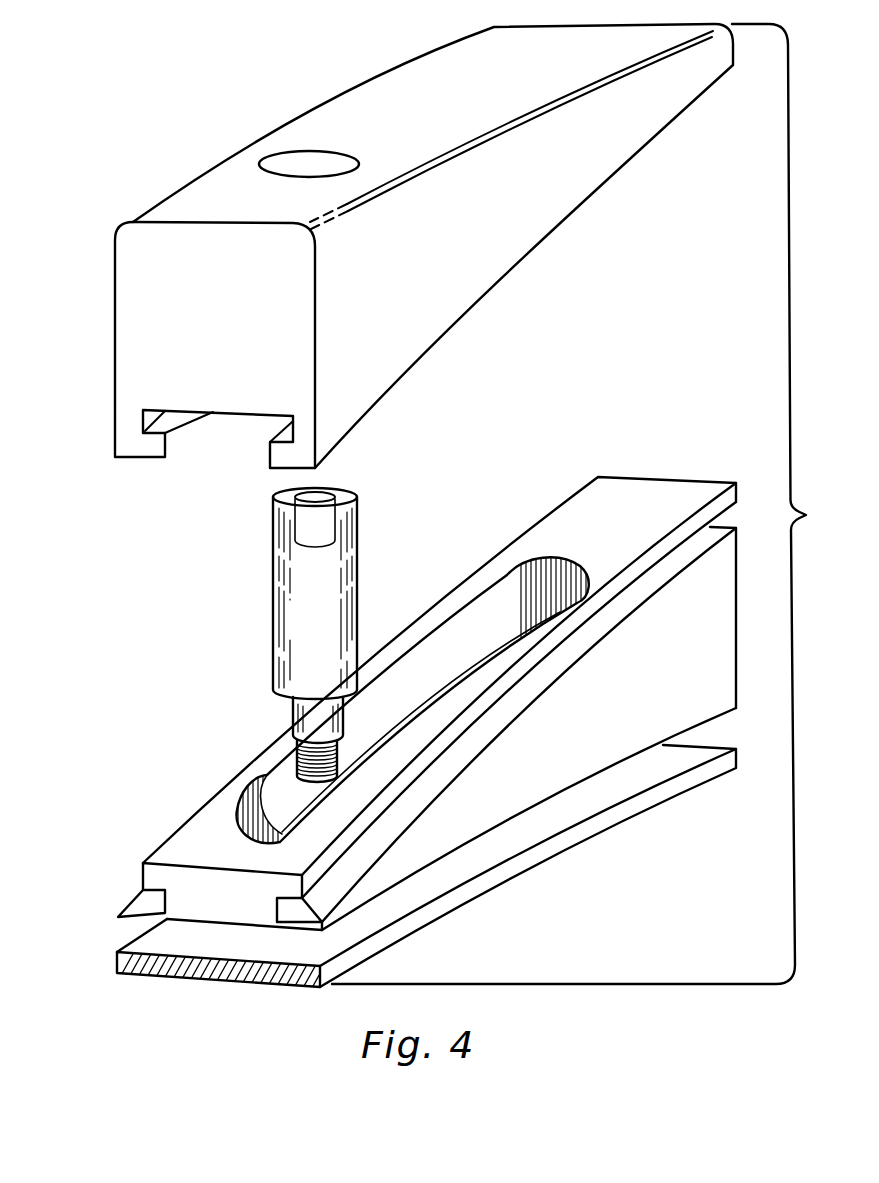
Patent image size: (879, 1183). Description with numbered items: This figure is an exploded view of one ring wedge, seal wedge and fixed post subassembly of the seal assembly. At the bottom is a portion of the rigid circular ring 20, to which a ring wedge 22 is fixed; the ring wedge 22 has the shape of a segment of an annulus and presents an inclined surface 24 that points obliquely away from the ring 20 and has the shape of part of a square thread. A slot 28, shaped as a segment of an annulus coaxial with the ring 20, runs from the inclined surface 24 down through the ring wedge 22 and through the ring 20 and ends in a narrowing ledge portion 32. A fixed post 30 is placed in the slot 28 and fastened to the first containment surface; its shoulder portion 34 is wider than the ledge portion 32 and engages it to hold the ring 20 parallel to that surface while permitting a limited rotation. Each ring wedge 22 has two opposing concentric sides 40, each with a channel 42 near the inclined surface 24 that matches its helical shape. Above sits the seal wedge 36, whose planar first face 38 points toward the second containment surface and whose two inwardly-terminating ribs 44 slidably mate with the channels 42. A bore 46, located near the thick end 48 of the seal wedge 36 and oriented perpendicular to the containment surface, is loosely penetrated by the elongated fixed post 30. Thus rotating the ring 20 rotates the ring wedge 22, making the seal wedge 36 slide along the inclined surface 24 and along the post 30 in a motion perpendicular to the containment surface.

The rigid circular ring 20 is at (635, 807).
The ring wedge 22 is at (389, 703).
The inclined surface 24 is at (210, 840).
The slot 28 is at (431, 661).
The fixed post 30 is at (264, 645).
The ledge portion 32 is at (290, 802).
The shoulder portion 34 is at (280, 703).
The seal wedge 36 is at (383, 271).
The first face 38 is at (400, 88).
The concentric side 40 is at (622, 740).
The channel 42 is at (148, 902).
The rib 44 is at (140, 447).
The bore 46 is at (305, 163).
The thick end 48 is at (133, 297).